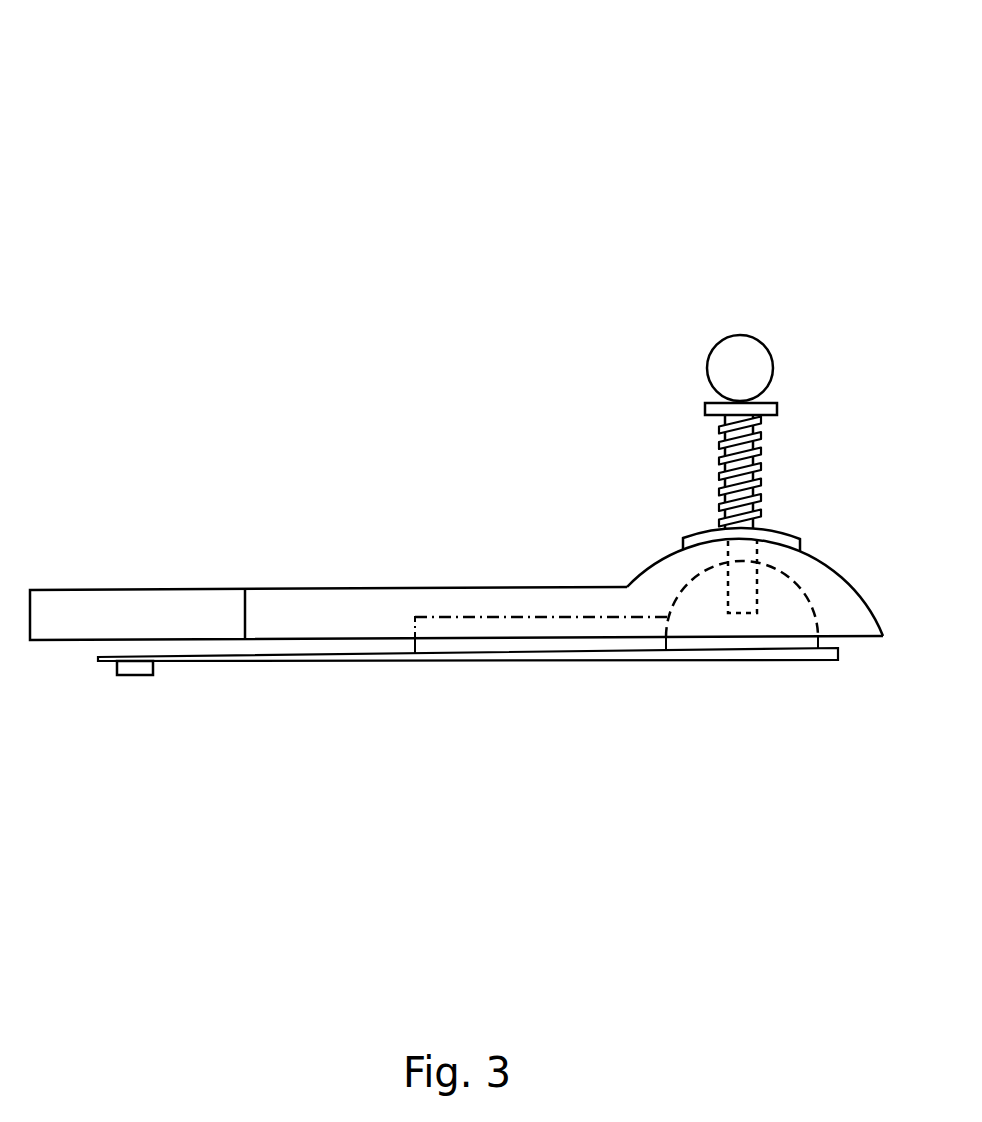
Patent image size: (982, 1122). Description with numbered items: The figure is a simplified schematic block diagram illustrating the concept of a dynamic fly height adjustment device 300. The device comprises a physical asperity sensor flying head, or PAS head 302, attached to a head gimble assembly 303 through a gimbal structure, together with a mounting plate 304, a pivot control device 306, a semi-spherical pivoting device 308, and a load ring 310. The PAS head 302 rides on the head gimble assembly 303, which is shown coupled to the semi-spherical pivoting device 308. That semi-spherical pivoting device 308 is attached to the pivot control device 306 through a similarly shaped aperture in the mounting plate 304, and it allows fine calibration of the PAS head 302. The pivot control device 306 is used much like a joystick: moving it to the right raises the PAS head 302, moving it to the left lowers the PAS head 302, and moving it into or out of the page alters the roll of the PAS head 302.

The dynamic fly height adjustment device 300 is at (205, 113).
The physical asperity sensor (PAS) flying head 302 is at (130, 672).
The head gimble assembly 303 is at (440, 661).
The mounting plate 304 is at (383, 588).
The pivot control device 306 is at (760, 337).
The semi-spherical pivoting device 308 is at (688, 596).
The load ring 310 is at (720, 528).